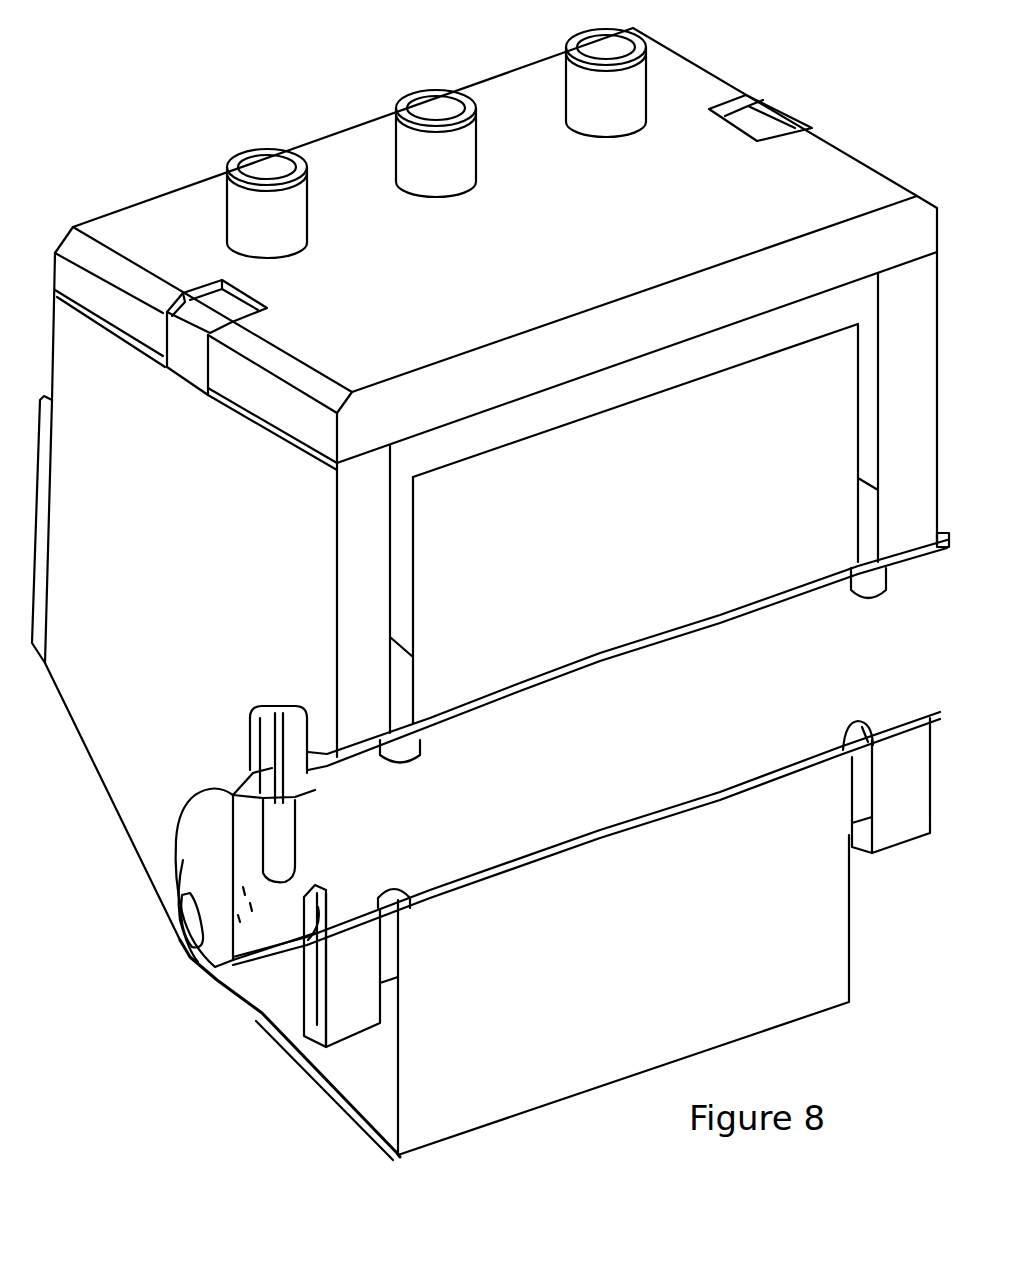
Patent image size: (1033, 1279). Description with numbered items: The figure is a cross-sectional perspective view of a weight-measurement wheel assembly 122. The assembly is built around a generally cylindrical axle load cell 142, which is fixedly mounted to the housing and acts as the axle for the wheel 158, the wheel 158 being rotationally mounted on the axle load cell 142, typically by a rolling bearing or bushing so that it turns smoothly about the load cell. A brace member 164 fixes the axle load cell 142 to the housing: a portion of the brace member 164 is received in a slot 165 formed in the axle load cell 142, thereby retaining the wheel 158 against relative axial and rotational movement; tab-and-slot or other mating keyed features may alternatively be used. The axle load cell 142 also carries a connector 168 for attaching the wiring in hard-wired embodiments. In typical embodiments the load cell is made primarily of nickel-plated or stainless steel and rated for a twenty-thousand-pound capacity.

The weight-measurement wheel assembly 122 is at (116, 1074).
The axle load cell 142 is at (162, 844).
The wheel 158 is at (324, 1118).
The brace member 164 is at (342, 980).
The slot 165 is at (303, 950).
The connector 168 is at (248, 695).